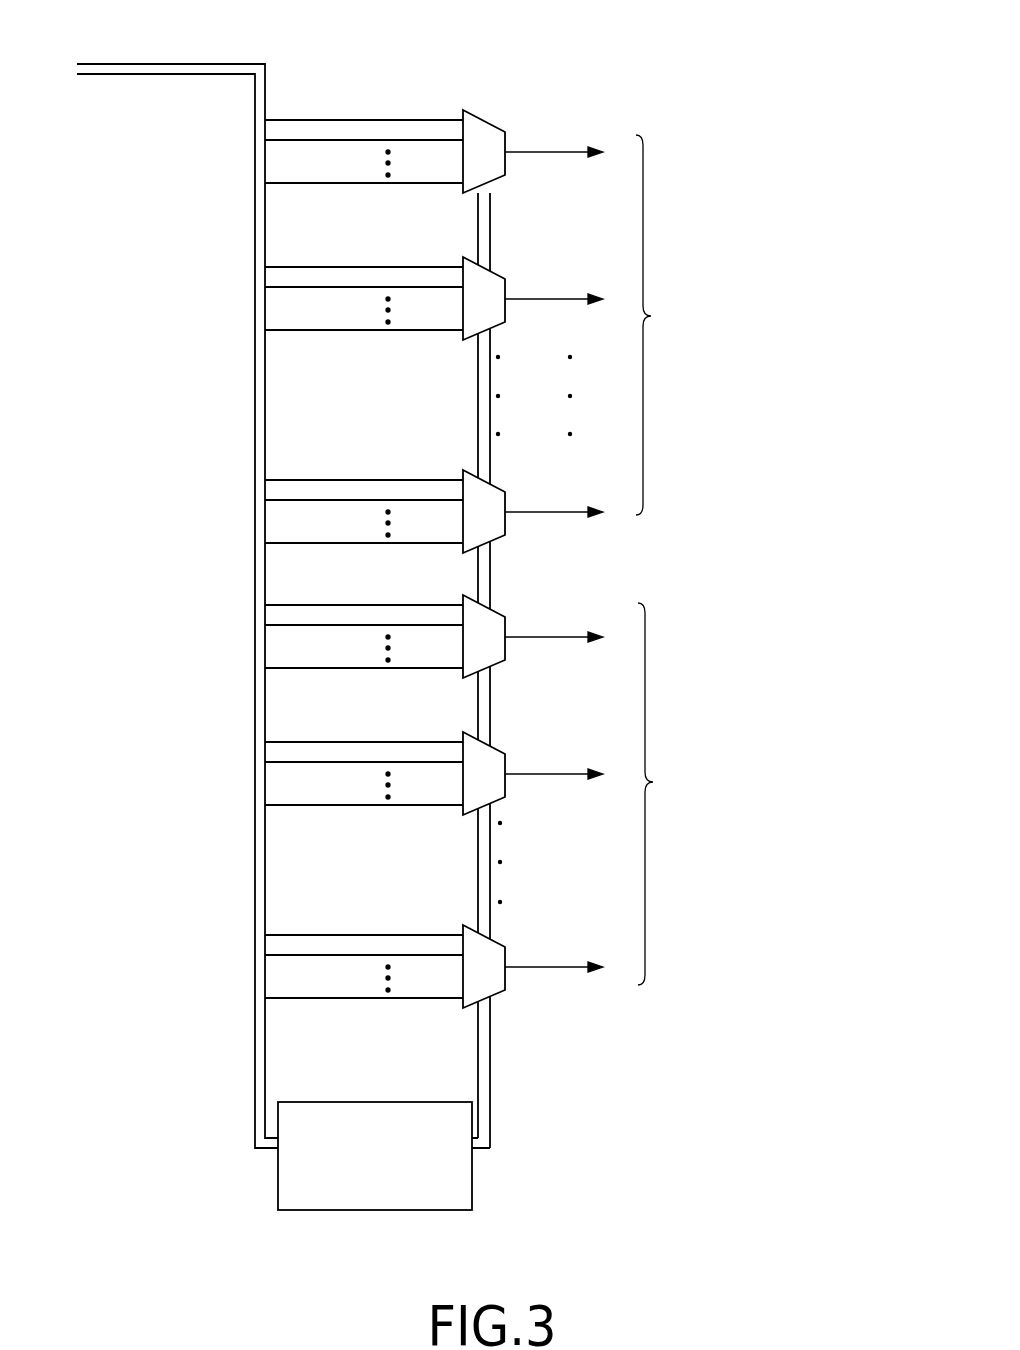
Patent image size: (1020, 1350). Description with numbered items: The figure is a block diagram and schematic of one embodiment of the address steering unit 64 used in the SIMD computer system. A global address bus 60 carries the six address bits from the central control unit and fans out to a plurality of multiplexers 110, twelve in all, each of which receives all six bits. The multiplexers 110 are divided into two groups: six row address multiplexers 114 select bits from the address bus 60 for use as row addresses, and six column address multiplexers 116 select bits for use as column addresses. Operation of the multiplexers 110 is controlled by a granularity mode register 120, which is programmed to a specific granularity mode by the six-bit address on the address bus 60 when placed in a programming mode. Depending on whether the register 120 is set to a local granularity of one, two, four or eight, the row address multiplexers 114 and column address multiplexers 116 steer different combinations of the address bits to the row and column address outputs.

The address bus 60 is at (265, 88).
The address steering unit 64 is at (806, 112).
The multiplexers 110 is at (492, 122).
The row address multiplexers 114 is at (743, 325).
The column address multiplexers 116 is at (746, 794).
The granularity mode register 120 is at (472, 1180).